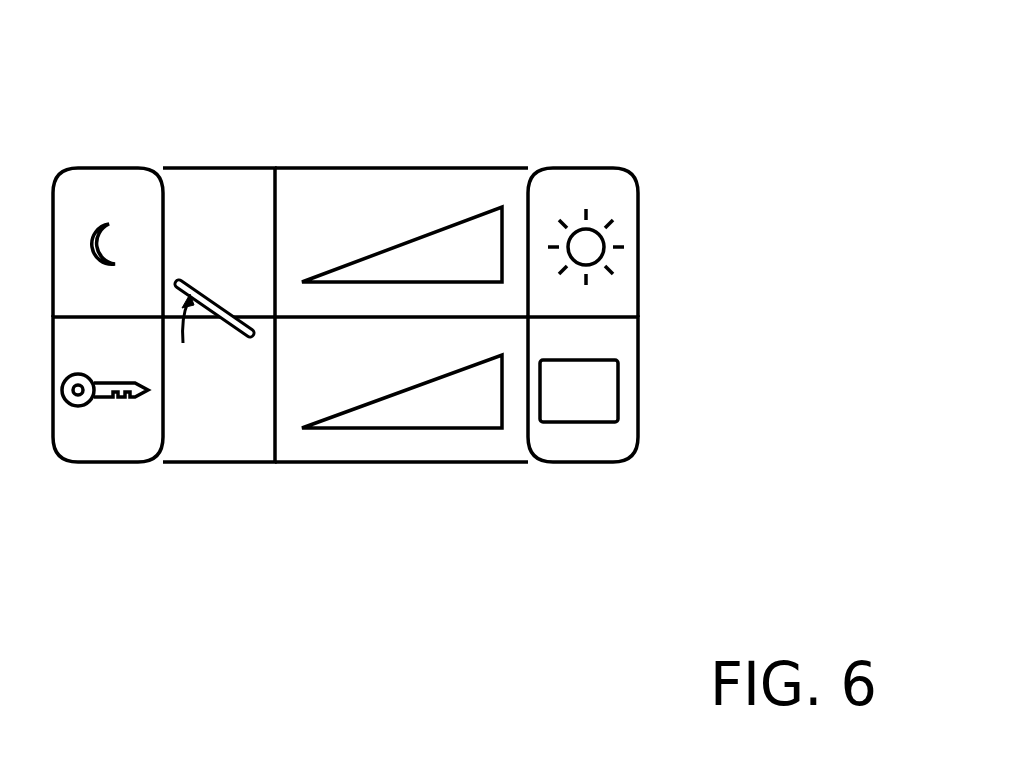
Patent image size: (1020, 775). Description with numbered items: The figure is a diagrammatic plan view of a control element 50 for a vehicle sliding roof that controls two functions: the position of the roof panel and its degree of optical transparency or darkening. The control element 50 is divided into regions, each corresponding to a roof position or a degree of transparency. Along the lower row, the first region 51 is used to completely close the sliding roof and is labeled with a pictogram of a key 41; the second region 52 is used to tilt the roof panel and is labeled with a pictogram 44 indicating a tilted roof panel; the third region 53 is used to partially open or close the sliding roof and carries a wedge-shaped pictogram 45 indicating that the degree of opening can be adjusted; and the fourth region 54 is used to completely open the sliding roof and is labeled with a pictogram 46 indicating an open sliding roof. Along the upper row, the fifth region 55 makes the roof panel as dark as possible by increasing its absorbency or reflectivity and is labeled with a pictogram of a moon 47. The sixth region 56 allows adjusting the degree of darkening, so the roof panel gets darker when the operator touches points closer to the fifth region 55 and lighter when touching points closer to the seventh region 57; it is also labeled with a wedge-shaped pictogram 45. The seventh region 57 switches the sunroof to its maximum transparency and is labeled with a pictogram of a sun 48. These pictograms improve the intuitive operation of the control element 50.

The pictogram of a key 41 is at (80, 408).
The pictogram indicating a tilted roof panel 44 is at (208, 297).
The wedge-shaped pictogram 45 is at (417, 255).
The pictogram indicating an open sliding roof 46 is at (597, 403).
The pictogram of a moon 47 is at (105, 225).
The pictogram of a sun 48 is at (590, 245).
The control element 50 is at (682, 184).
The first region 51 is at (140, 433).
The second region 52 is at (213, 423).
The third region 53 is at (328, 442).
The fourth region 54 is at (562, 452).
The fifth region 55 is at (78, 192).
The sixth region 56 is at (334, 202).
The seventh region 57 is at (547, 195).